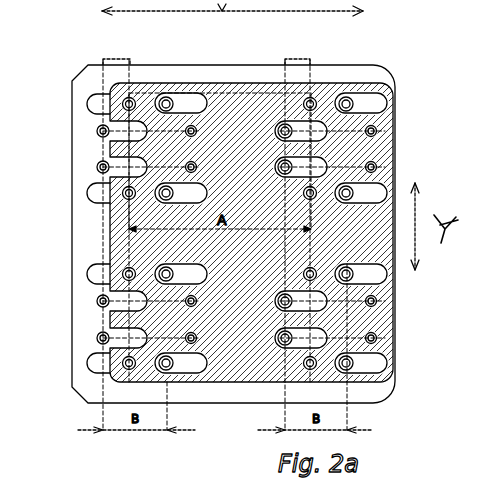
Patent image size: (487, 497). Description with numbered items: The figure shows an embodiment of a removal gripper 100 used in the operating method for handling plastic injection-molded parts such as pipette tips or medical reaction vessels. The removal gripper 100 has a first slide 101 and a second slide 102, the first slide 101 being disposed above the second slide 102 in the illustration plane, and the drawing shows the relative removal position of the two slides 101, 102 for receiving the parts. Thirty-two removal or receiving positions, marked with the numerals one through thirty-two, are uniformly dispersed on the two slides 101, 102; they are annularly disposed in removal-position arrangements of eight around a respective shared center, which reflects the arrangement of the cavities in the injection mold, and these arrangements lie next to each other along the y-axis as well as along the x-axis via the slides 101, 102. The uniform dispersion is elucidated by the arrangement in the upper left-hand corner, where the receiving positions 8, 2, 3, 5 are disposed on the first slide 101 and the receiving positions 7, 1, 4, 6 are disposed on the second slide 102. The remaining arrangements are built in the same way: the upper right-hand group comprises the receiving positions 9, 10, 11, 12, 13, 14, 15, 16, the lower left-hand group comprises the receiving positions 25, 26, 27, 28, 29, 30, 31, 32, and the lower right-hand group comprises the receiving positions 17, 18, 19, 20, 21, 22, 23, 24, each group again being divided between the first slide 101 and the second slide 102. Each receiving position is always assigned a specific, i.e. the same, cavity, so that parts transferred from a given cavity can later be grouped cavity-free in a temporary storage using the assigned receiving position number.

The receiving position 1 is at (168, 93).
The receiving position 2 is at (197, 131).
The receiving position 3 is at (205, 190).
The receiving position 4 is at (168, 201).
The receiving position 5 is at (128, 200).
The receiving position 6 is at (99, 191).
The receiving position 7 is at (95, 128).
The receiving position 8 is at (126, 97).
The receiving position 9 is at (352, 94).
The receiving position 10 is at (377, 131).
The receiving position 11 is at (377, 171).
The receiving position 12 is at (348, 201).
The receiving position 13 is at (306, 199).
The receiving position 14 is at (281, 175).
The receiving position 15 is at (278, 131).
The receiving position 16 is at (306, 100).
The receiving position 17 is at (358, 262).
The receiving position 18 is at (377, 300).
The receiving position 19 is at (377, 342).
The receiving position 20 is at (352, 372).
The receiving position 21 is at (304, 368).
The receiving position 22 is at (280, 344).
The receiving position 23 is at (278, 299).
The receiving position 24 is at (307, 268).
The receiving position 25 is at (183, 263).
The receiving position 26 is at (197, 300).
The receiving position 27 is at (209, 356).
The receiving position 28 is at (170, 370).
The receiving position 29 is at (124, 369).
The receiving position 30 is at (100, 361).
The receiving position 31 is at (97, 300).
The receiving position 32 is at (126, 268).
The removal gripper 100 is at (387, 406).
The first slide 101 is at (398, 147).
The second slide 102 is at (220, 60).